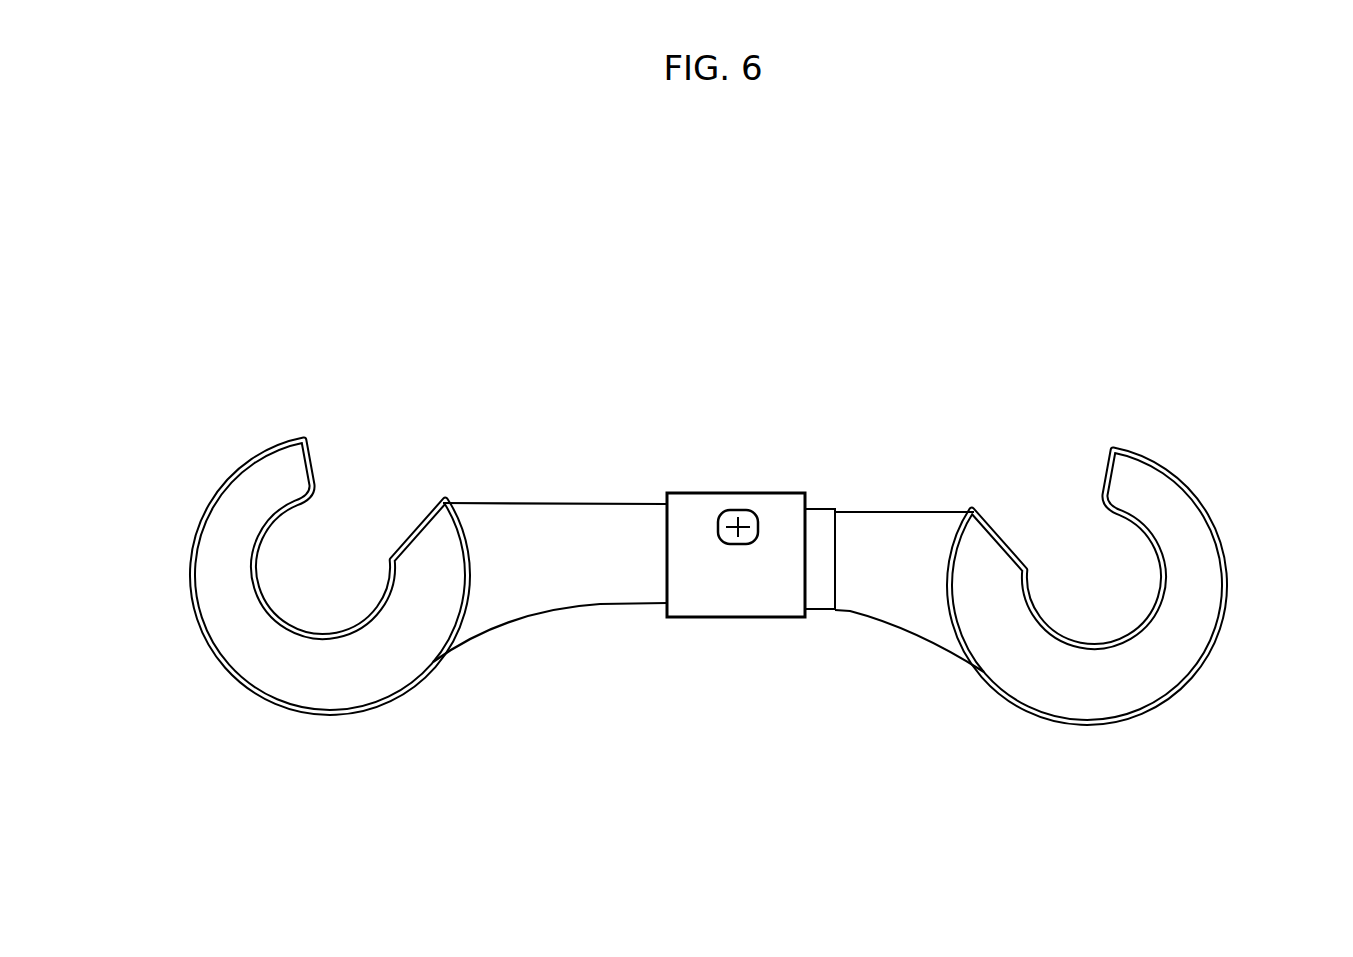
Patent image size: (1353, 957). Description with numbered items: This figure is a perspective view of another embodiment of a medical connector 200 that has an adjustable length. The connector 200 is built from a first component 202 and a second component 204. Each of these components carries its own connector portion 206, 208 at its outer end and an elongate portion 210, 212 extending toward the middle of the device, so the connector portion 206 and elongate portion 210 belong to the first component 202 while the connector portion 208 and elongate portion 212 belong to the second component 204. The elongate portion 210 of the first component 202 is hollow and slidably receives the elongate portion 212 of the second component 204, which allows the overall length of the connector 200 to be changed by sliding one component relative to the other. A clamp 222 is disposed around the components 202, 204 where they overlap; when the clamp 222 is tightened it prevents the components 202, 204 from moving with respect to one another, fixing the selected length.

The connector 200 is at (286, 264).
The first component 202 is at (188, 451).
The second component 204 is at (1236, 475).
The connector portion 206 is at (315, 687).
The connector portion 208 is at (1090, 697).
The elongate portion 210 is at (580, 582).
The elongate portion 212 is at (880, 595).
The clamp 222 is at (733, 497).